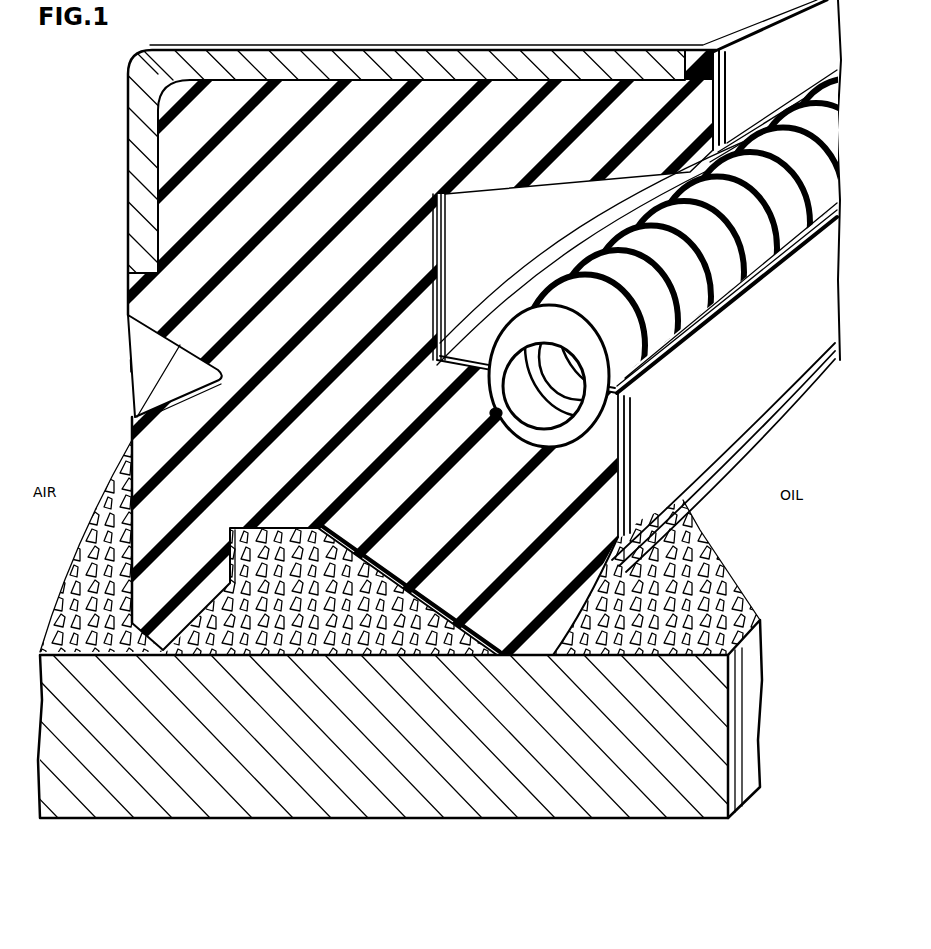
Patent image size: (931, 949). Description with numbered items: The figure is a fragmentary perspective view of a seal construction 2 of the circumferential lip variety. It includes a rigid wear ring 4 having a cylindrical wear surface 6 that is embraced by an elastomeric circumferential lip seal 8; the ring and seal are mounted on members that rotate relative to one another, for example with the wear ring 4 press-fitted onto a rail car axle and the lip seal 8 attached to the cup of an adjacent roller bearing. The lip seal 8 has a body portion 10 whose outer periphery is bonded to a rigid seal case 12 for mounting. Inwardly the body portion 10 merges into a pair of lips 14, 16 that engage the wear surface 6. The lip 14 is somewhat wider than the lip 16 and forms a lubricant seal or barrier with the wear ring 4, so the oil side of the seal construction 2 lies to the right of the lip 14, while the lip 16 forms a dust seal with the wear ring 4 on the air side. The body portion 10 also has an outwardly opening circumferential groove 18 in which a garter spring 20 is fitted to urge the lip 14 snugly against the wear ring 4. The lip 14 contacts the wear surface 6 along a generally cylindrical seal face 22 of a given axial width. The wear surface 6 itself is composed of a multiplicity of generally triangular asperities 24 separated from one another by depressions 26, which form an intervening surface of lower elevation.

The seal construction 2 is at (102, 359).
The wear ring 4 is at (597, 806).
The wear surface 6 is at (62, 612).
The lip seal 8 is at (130, 418).
The body portion 10 is at (322, 377).
The seal case 12 is at (128, 160).
The lip 14 is at (540, 618).
The lip 16 is at (172, 598).
The circumferential groove 18 is at (578, 444).
The garter spring 20 is at (492, 393).
The seal face 22 is at (530, 655).
The asperities 24 is at (226, 655).
The depressions 26 is at (291, 655).